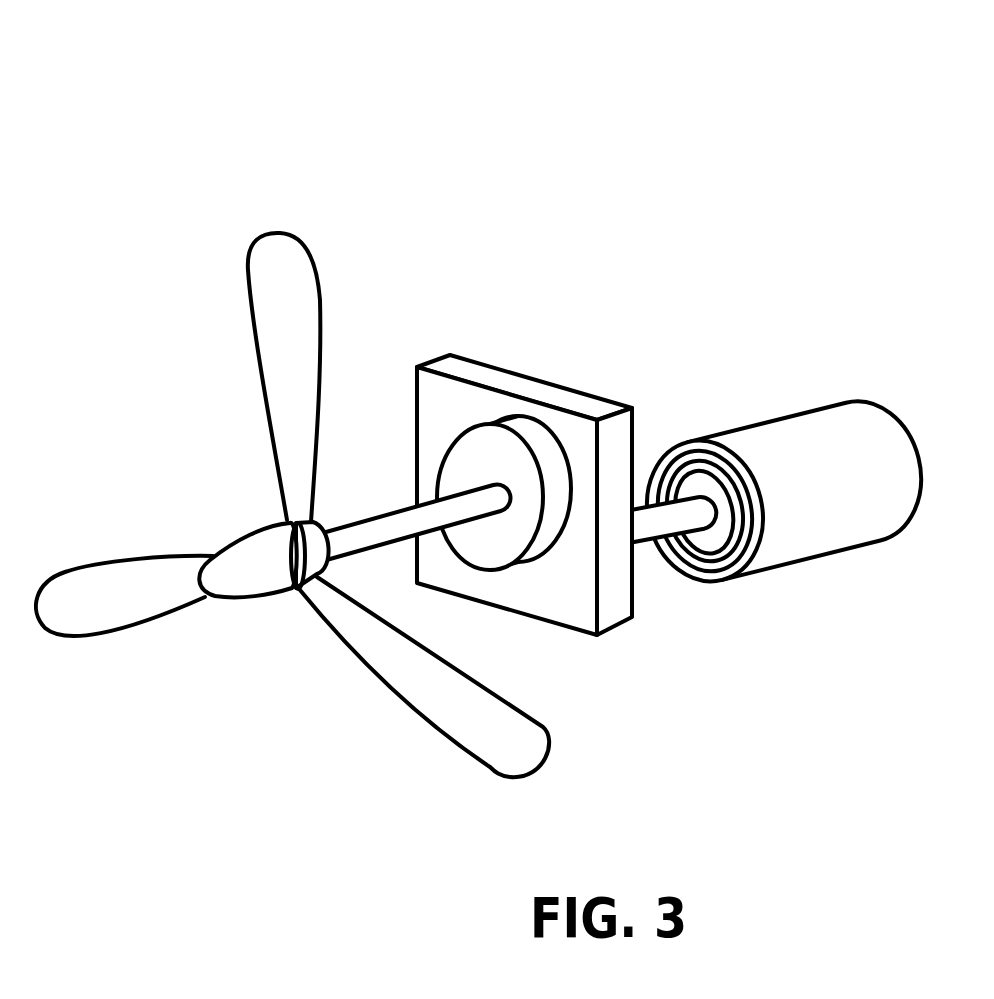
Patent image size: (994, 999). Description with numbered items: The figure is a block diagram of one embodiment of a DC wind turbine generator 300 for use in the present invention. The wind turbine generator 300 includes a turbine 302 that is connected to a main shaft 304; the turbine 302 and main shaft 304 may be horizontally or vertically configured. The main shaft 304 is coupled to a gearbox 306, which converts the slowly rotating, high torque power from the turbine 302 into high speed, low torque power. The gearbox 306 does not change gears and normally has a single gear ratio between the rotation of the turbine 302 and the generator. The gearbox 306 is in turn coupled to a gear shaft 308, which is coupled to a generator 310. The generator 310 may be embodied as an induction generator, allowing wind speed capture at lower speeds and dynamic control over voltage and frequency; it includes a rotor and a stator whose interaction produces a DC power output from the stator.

The wind turbine generator 300 is at (511, 90).
The turbine 302 is at (272, 662).
The main shaft 304 is at (380, 523).
The gearbox 306 is at (552, 603).
The gear shaft 308 is at (645, 530).
The generator 310 is at (860, 509).